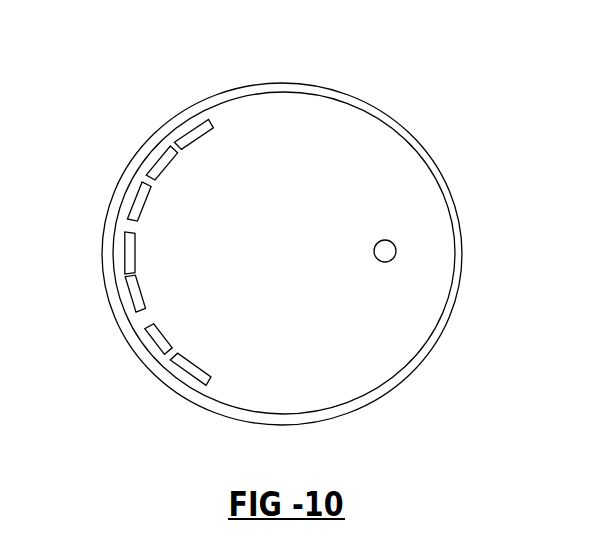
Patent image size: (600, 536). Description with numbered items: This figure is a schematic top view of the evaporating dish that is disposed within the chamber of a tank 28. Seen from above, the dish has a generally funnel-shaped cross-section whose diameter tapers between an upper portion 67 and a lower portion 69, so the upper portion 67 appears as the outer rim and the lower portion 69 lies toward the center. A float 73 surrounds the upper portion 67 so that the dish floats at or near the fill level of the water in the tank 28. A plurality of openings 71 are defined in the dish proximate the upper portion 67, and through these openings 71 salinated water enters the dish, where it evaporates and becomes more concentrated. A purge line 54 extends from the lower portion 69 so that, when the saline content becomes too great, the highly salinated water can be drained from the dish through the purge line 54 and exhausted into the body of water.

The tank 28 is at (268, 224).
The purge line 54 is at (382, 252).
The upper portion 67 is at (264, 96).
The lower portion 69 is at (290, 250).
The openings 71 is at (128, 256).
The float 73 is at (337, 97).